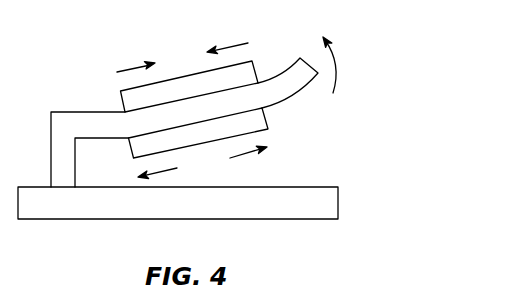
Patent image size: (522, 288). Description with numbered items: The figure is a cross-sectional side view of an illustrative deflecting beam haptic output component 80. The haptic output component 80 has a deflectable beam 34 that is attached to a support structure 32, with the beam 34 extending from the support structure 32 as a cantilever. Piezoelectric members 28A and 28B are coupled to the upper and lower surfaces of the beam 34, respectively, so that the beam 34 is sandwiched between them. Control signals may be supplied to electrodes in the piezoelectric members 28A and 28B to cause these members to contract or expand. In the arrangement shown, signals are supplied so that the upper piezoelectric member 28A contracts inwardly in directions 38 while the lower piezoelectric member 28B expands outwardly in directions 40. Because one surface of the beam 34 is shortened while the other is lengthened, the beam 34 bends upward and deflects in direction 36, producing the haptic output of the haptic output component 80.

The piezoelectric member 28A is at (123, 102).
The piezoelectric member 28B is at (267, 117).
The support structure 32 is at (62, 207).
The beam 34 is at (284, 78).
The direction 36 is at (336, 56).
The directions 38 is at (232, 44).
The directions 40 is at (244, 158).
The haptic output component 80 is at (374, 97).